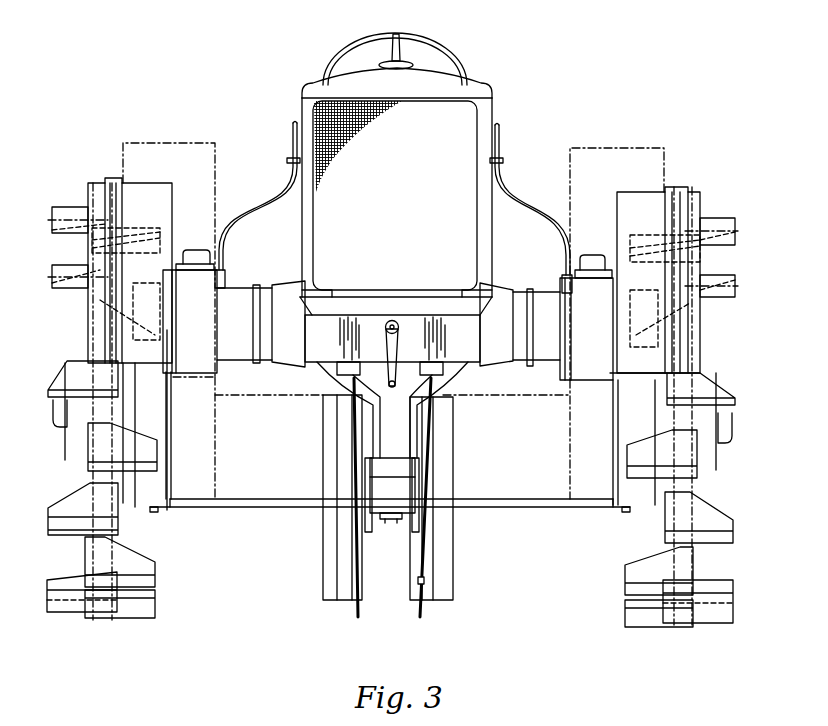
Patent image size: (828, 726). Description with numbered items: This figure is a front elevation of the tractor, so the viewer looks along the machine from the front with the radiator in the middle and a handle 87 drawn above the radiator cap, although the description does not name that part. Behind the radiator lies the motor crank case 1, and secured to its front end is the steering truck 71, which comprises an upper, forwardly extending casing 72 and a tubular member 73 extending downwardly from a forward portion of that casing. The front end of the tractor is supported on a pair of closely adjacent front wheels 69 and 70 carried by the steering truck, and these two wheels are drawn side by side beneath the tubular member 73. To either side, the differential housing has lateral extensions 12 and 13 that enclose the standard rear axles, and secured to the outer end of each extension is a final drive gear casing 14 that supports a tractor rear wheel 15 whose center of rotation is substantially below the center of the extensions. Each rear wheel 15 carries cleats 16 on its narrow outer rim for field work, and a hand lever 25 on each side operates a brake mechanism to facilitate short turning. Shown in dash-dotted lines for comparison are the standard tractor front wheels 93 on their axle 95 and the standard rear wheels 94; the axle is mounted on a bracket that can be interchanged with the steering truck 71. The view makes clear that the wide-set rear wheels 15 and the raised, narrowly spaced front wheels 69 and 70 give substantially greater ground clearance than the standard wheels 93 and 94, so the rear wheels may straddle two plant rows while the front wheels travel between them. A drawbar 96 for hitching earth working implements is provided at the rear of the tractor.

The radiator handle 87 is at (445, 53).
The hand lever 25 is at (292, 130).
The standard rear wheels 94 is at (184, 143).
The final drive gear casing 14 is at (156, 292).
The lateral extension 12 is at (247, 289).
The lateral extension 13 is at (543, 290).
The tractor rear wheel 15 is at (78, 347).
The casing 72 is at (305, 329).
The motor crank case 1 is at (457, 378).
The standard tractor front wheels 93 is at (172, 394).
The axle 95 is at (517, 397).
The drawbar 96 is at (553, 510).
The tubular member 73 is at (409, 438).
The cleats 16 is at (68, 578).
The front wheel 70 is at (325, 556).
The steering truck 71 is at (398, 560).
The front wheel 69 is at (457, 561).